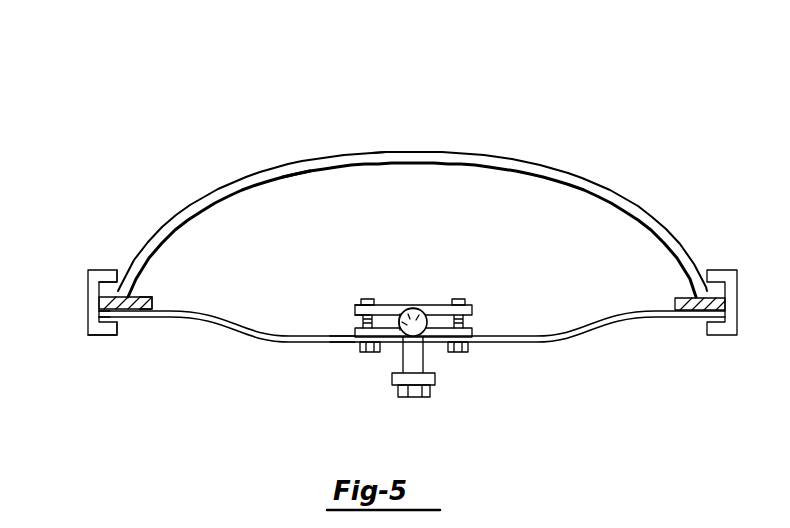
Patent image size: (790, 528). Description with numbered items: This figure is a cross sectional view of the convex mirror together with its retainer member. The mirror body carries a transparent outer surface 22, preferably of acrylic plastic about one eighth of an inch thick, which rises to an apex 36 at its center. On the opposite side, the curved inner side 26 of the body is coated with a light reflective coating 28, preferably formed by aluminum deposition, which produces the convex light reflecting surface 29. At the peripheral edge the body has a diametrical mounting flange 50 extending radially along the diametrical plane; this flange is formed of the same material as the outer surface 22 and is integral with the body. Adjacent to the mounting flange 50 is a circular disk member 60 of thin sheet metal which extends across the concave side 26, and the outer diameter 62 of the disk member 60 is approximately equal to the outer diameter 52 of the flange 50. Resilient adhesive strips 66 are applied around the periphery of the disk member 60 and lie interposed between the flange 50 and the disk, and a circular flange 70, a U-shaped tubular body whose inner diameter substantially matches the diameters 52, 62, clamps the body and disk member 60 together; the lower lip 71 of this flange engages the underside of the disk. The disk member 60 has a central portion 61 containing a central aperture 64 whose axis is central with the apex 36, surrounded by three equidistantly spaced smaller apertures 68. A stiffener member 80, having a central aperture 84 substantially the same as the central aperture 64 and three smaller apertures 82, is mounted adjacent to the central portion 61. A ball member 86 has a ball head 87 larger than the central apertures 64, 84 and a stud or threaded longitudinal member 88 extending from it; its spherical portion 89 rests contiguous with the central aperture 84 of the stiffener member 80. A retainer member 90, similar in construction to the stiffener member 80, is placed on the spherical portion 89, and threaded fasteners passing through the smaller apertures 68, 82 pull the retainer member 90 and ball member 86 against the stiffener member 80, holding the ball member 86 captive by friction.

The transparent outer surface 22 is at (622, 142).
The curved inner side 26 is at (297, 177).
The light reflective coating 28 is at (408, 165).
The convex light reflecting surface 29 is at (325, 168).
The apex 36 is at (410, 153).
The diametrical mounting flange 50 is at (118, 290).
The outer diameter of the flange 52 is at (100, 303).
The circular disk member 60 is at (292, 337).
The central portion 61 is at (345, 347).
The outer diameter of the disk member 62 is at (105, 320).
The central aperture 64 is at (437, 340).
The resilient adhesive strips 66 is at (150, 302).
The smaller apertures 68 is at (378, 352).
The circular flange 70 is at (88, 308).
The bracket lower lip 71 is at (117, 333).
The stiffener member 80 is at (470, 333).
The smaller apertures 82 is at (385, 307).
The central aperture 84 is at (445, 307).
The ball member 86 is at (428, 308).
The ball head 87 is at (413, 307).
The stud or threaded longitudinal member 88 is at (418, 397).
The spherical portion 89 is at (396, 307).
The retainer member 90 is at (355, 307).